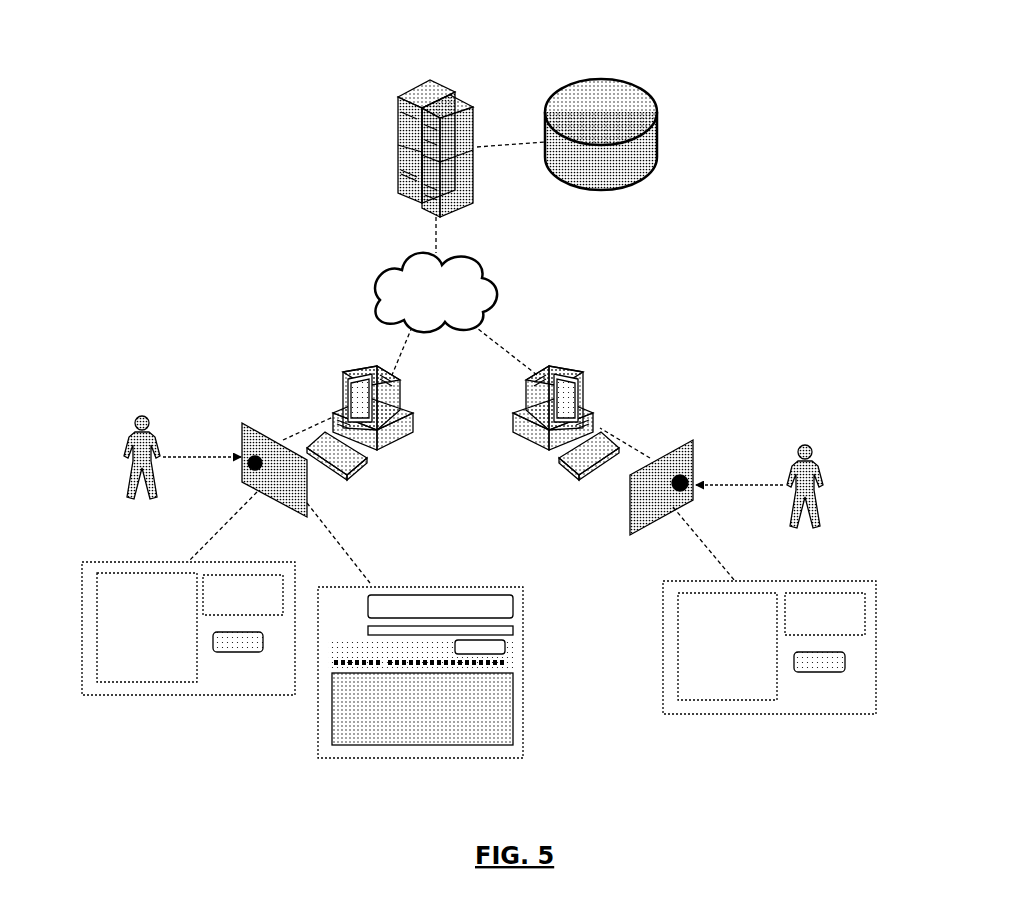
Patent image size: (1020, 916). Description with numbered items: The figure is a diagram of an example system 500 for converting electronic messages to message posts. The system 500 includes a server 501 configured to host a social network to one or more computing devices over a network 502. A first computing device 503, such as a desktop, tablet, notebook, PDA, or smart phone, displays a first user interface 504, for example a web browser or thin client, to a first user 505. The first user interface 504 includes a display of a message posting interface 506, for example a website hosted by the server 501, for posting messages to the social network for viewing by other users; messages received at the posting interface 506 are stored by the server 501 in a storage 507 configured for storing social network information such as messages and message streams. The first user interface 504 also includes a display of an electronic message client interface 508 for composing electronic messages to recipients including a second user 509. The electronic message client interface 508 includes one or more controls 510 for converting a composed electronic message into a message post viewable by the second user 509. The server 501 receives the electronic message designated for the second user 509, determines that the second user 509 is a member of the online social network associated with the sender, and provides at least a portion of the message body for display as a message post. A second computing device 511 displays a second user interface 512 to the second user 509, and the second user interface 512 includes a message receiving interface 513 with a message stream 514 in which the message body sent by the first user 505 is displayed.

The system 500 is at (305, 146).
The server 501 is at (462, 137).
The network 502 is at (436, 292).
The first computing device 503 is at (343, 369).
The first user interface 504 is at (242, 442).
The first user 505 is at (101, 454).
The message posting interface 506 is at (188, 659).
The storage 507 is at (601, 134).
The electronic message client interface 508 is at (395, 646).
The second user 509 is at (845, 467).
The controls 510 is at (510, 590).
The second computing device 511 is at (594, 388).
The second user interface 512 is at (704, 445).
The message receiving interface 513 is at (727, 653).
The message stream 514 is at (681, 659).